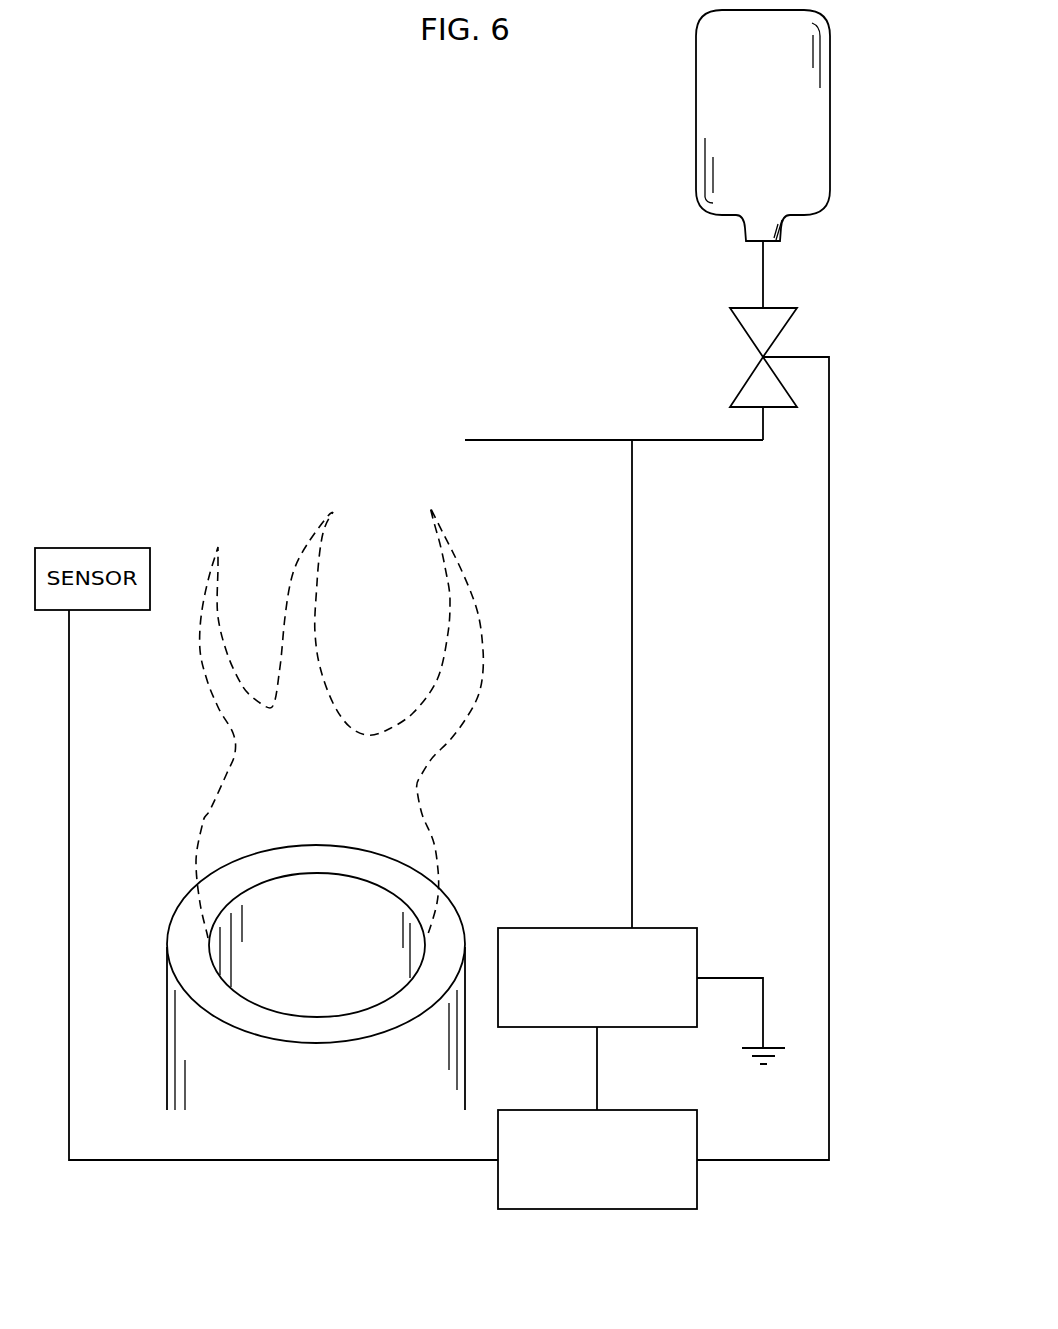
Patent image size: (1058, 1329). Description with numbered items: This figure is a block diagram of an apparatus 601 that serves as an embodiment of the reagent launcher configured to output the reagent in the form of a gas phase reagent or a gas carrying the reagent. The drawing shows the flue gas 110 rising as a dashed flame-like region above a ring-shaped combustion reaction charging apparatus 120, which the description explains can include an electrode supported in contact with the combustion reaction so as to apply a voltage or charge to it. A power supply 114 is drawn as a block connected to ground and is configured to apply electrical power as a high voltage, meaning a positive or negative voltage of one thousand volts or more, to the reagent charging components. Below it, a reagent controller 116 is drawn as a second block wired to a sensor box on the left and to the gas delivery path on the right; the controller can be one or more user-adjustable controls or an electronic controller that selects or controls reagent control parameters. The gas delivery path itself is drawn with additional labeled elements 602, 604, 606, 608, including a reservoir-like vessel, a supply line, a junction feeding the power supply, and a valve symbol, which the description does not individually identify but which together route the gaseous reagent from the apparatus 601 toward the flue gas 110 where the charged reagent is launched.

The apparatus configured to output a gaseous reagent 601 is at (238, 106).
The reagent reservoir 602 is at (830, 171).
The reagent supply line 604 is at (526, 440).
The junction / feed line 606 is at (642, 453).
The valve 608 is at (760, 358).
The flue gas 110 is at (352, 362).
The combustion reaction charging apparatus 120 is at (167, 1012).
The power supply 114 is at (615, 1002).
The reagent controller 116 is at (615, 1197).